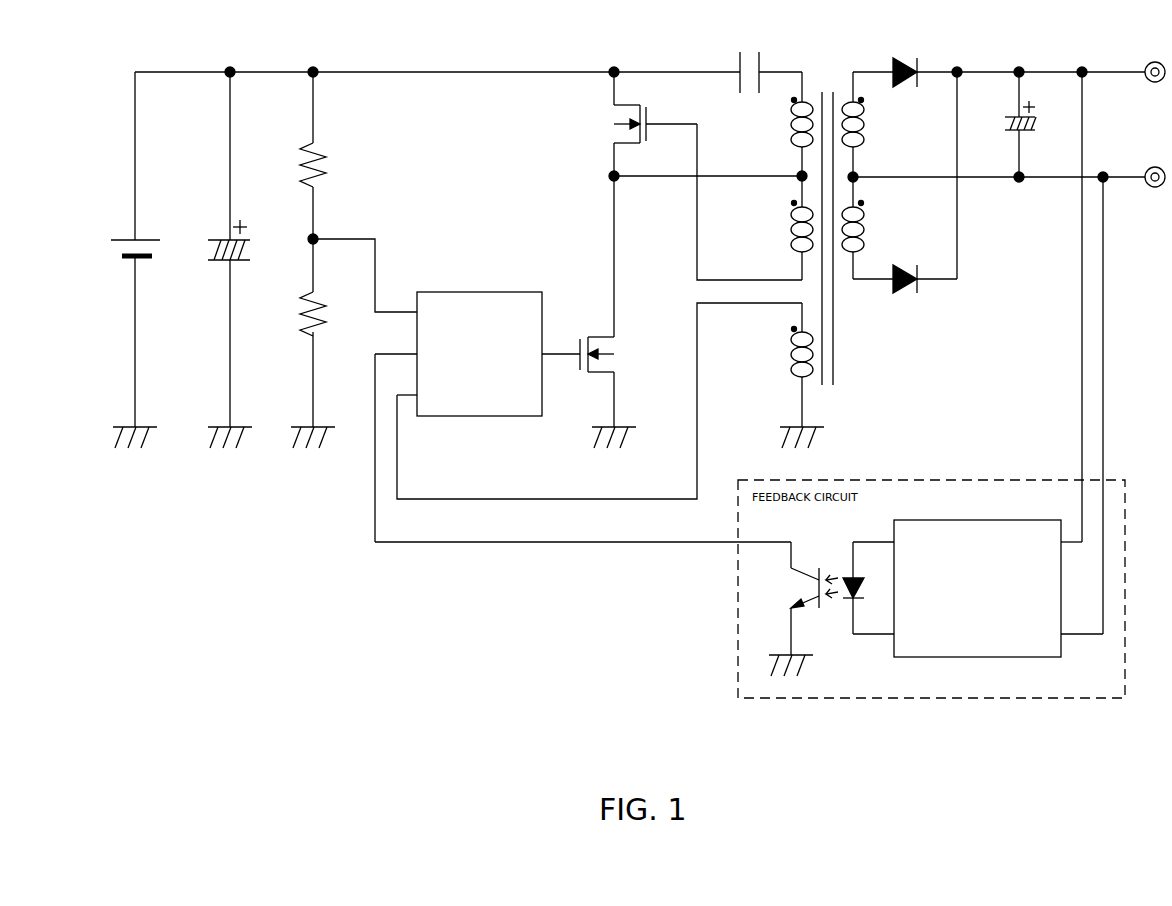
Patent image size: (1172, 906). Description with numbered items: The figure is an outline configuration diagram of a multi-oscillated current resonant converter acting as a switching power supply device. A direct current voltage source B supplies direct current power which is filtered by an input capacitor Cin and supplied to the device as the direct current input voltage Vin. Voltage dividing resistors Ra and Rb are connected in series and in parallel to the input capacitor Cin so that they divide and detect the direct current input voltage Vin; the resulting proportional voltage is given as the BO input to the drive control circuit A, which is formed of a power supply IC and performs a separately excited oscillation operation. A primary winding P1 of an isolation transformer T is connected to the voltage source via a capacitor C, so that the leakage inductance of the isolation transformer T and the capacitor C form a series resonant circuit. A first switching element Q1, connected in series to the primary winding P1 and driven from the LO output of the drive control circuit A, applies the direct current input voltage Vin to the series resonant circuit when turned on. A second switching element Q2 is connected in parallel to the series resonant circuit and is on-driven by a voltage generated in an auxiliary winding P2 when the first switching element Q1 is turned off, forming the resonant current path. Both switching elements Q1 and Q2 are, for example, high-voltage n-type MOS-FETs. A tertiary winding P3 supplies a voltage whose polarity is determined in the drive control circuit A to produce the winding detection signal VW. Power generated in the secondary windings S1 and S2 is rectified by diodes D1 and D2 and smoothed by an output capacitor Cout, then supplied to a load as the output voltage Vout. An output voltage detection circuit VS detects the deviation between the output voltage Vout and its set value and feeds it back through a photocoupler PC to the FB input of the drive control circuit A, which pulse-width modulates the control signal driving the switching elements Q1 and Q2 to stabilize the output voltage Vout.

The direct current voltage source B is at (135, 249).
The input capacitor Cin is at (233, 249).
The direct current input voltage Vin is at (306, 60).
The voltage dividing resistor Ra is at (330, 155).
The voltage dividing resistor Rb is at (331, 333).
The drive control circuit A is at (487, 292).
The first switching element Q1 is at (593, 301).
The second switching element Q2 is at (636, 124).
The capacitor C is at (734, 70).
The isolation transformer T is at (826, 222).
The primary winding P1 is at (788, 124).
The auxiliary winding P2 is at (788, 228).
The tertiary winding P3 is at (788, 365).
The secondary winding S1 is at (867, 124).
The secondary winding S2 is at (867, 228).
The diode D1 is at (912, 61).
The diode D2 is at (925, 182).
The output capacitor Cout is at (1034, 127).
The output voltage Vout is at (1113, 116).
The photocoupler PC is at (842, 598).
The output voltage detection circuit VS is at (988, 520).